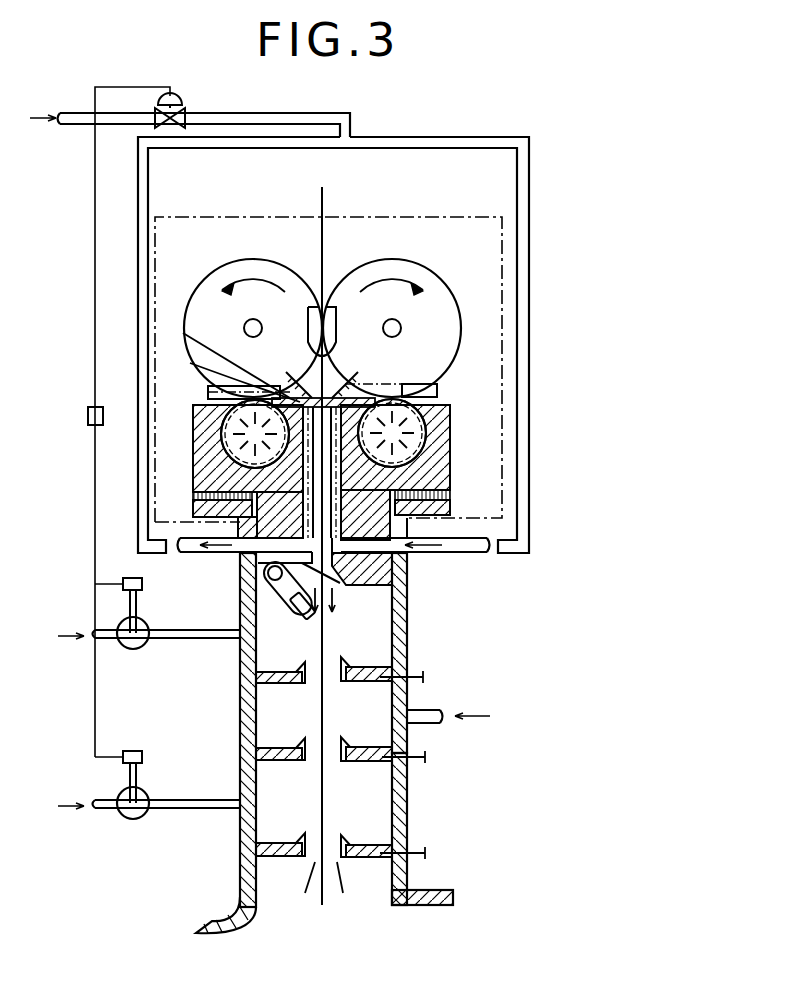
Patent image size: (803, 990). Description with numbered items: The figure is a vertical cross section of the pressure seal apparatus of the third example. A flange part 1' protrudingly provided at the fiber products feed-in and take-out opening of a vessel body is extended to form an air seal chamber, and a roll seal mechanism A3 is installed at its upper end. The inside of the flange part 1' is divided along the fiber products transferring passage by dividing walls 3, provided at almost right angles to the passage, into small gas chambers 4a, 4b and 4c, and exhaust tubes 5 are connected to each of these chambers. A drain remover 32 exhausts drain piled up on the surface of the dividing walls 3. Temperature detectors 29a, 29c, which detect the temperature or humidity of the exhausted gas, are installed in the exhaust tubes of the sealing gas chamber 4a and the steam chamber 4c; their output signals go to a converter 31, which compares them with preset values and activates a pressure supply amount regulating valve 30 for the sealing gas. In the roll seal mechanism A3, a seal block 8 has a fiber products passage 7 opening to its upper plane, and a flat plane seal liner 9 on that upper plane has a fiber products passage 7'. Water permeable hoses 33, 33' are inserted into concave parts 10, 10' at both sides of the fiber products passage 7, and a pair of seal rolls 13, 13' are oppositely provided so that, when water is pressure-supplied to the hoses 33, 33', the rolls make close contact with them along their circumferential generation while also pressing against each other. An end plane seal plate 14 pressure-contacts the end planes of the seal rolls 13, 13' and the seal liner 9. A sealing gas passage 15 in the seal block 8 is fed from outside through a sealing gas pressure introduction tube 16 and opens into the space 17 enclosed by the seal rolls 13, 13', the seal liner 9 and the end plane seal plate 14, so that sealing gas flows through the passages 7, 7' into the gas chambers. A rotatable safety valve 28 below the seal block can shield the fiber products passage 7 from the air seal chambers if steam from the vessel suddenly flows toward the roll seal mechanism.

The flange part 1' is at (225, 898).
The dividing walls 3 is at (362, 845).
The sealing gas chamber 4a is at (406, 635).
The small gas chamber 4b is at (240, 716).
The steam chamber 4c is at (398, 818).
The exhaust tubes 5 is at (437, 712).
The fiber products passage 7 is at (342, 593).
The fiber products passage 7' is at (228, 356).
The seal block 8 is at (200, 480).
The flat plane seal liner 9 is at (236, 374).
The concave part 10 is at (228, 402).
The concave part 10' is at (419, 395).
The seal roll 13 is at (246, 315).
The seal roll 13' is at (401, 317).
The end plane seal plate 14 is at (440, 385).
The sealing gas passage 15 is at (425, 553).
The sealing gas pressure introduction tube 16 is at (528, 458).
The space 17 is at (370, 395).
The safety valve 28 is at (290, 613).
The temperature detector 29a is at (143, 585).
The temperature detector 29c is at (143, 758).
The pressure supply amount regulating valve 30 is at (176, 108).
The converter 31 is at (88, 418).
The drain remover 32 is at (418, 760).
The water permeable hose 33 is at (224, 434).
The water permeable hose 33' is at (424, 433).
The roll seal mechanism A3 is at (371, 216).